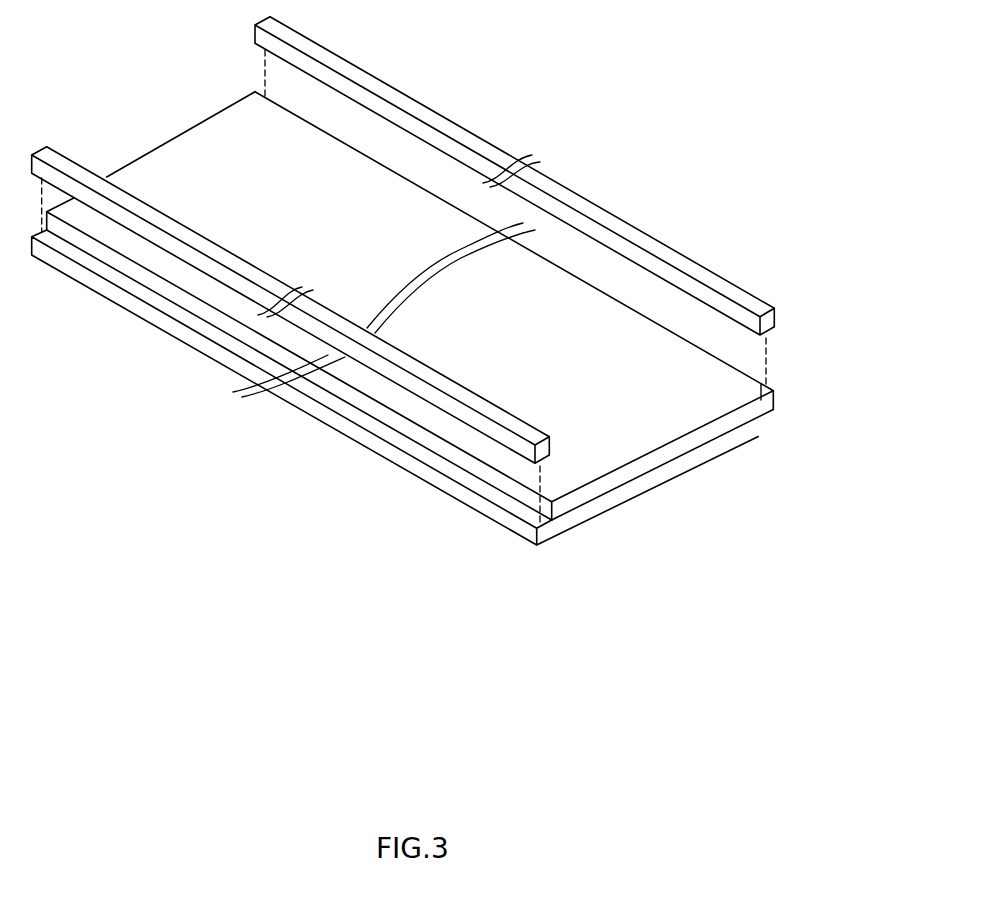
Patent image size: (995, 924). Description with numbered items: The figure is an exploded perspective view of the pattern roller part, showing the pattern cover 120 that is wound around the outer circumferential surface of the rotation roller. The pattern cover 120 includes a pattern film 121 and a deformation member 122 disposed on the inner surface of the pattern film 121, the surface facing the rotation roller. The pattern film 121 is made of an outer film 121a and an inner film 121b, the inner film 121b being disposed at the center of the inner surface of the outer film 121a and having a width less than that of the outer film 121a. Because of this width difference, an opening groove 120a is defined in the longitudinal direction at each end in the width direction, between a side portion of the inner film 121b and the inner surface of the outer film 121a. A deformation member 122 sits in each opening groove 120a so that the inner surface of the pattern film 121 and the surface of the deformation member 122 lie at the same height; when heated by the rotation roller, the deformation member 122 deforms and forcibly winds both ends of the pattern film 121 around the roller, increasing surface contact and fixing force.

The pattern cover 120 is at (452, 312).
The opening groove 120a is at (520, 506).
The pattern film 121 is at (406, 345).
The outer film 121a is at (410, 343).
The inner film 121b is at (643, 460).
The deformation member 122 is at (777, 327).